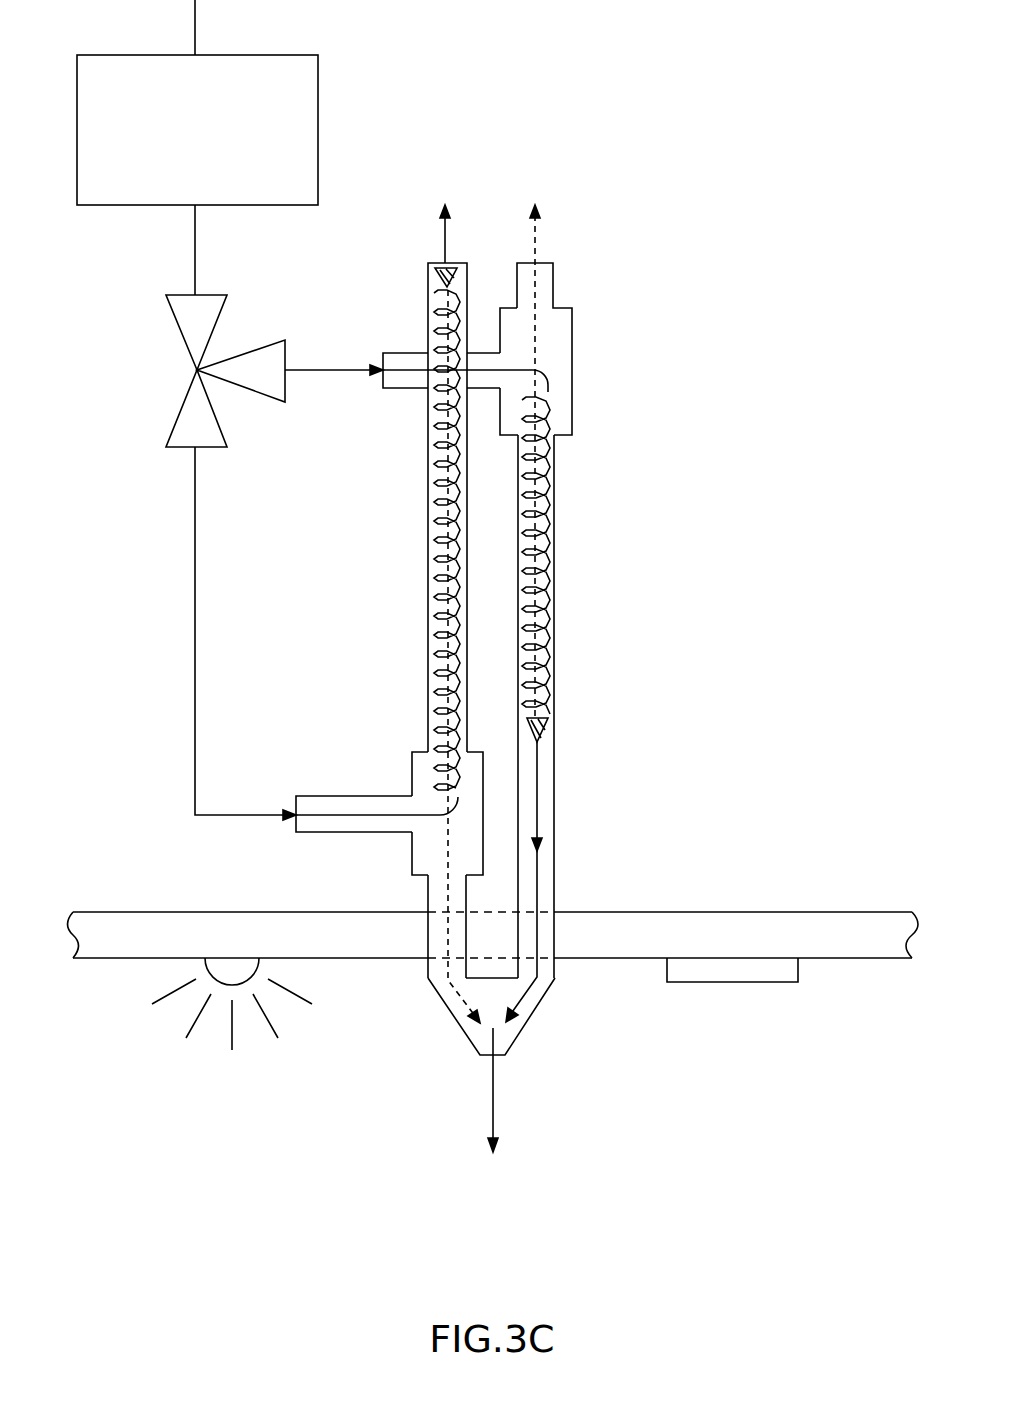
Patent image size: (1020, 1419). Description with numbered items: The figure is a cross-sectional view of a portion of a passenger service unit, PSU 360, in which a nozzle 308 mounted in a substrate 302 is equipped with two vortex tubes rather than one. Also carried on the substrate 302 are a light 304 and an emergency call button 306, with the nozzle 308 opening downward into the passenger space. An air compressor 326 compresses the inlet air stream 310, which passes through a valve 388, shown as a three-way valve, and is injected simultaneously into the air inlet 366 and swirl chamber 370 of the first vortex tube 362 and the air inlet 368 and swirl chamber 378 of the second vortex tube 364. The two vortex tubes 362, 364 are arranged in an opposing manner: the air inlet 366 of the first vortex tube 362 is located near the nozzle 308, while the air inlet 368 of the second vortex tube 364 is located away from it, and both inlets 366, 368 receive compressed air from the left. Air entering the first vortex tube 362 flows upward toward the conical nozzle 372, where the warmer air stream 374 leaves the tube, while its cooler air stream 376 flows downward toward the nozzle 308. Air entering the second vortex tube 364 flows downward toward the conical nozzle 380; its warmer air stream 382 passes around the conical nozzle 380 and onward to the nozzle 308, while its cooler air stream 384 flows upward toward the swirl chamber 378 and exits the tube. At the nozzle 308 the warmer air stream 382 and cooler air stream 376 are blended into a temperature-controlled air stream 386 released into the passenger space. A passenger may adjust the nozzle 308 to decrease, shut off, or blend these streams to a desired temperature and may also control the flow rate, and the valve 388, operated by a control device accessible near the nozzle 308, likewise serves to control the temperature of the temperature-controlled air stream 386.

The substrate 302 is at (122, 912).
The light 304 is at (205, 968).
The emergency call button 306 is at (728, 985).
The nozzle 308 is at (530, 1022).
The inlet air stream 310 is at (196, 247).
The air compressor 326 is at (121, 89).
The PSU 360 is at (721, 208).
The first vortex tube 362 is at (428, 512).
The second vortex tube 364 is at (556, 600).
The air inlet 366 is at (334, 796).
The air inlet 368 is at (393, 352).
The swirl chamber 370 is at (422, 768).
The conical nozzle 372 is at (453, 263).
The warmer air stream 374 is at (440, 234).
The cooler air stream 376 is at (443, 903).
The swirl chamber 378 is at (553, 338).
The conical nozzle 380 is at (550, 728).
The warmer air stream 382 is at (540, 815).
The cooler air stream 384 is at (537, 238).
The temperature-controlled air stream 386 is at (488, 1103).
The valve 388 is at (184, 337).